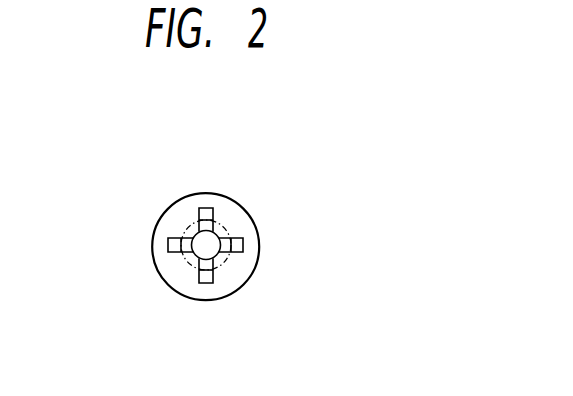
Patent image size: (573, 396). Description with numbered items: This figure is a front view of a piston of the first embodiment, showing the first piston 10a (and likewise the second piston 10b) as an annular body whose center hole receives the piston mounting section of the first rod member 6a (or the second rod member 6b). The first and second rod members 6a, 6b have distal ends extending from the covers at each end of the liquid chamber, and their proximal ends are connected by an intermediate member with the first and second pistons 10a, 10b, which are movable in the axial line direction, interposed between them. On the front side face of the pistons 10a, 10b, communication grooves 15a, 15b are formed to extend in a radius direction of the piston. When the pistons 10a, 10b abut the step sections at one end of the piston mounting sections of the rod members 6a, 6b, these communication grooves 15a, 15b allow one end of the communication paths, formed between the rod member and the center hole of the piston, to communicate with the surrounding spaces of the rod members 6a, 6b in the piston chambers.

The first rod member 6a is at (162, 201).
The second rod member 6b is at (188, 227).
The first piston 10a is at (186, 279).
The second piston 10b is at (175, 274).
The communication groove 15a is at (270, 238).
The communication groove 15b is at (207, 212).